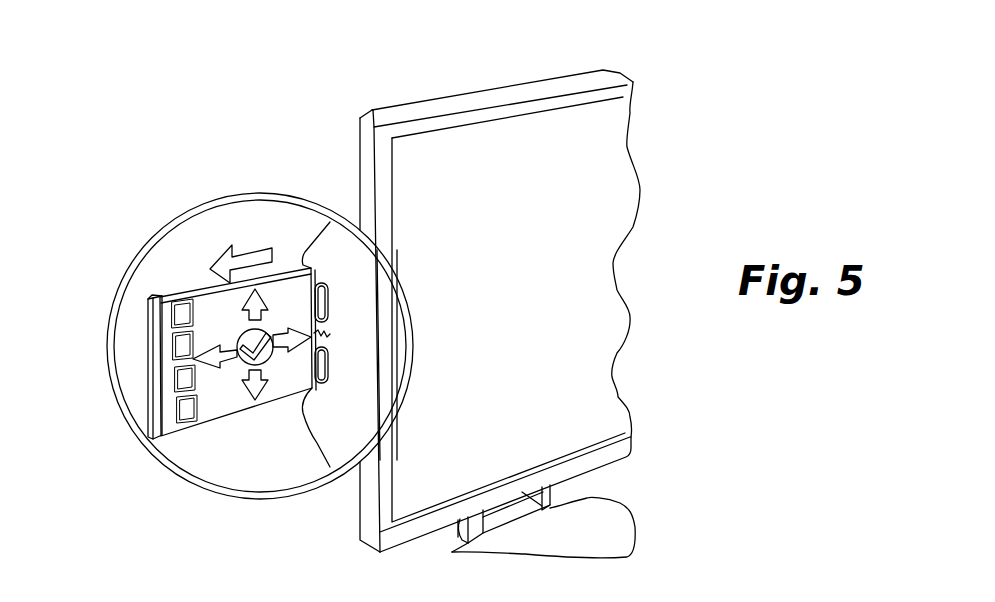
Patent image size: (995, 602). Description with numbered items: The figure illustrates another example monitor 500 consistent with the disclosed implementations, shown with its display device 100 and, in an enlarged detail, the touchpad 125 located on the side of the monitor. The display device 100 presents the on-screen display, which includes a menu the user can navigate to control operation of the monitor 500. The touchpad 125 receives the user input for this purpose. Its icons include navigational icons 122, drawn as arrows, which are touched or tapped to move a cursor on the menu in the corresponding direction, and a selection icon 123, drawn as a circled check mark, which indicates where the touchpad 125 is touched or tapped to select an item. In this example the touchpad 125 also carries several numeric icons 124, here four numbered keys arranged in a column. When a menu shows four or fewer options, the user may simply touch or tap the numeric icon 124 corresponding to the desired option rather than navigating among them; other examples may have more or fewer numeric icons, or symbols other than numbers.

The display device 100 is at (452, 163).
The monitor 500 is at (302, 127).
The touchpad 125 is at (215, 310).
The numeric icons 124 is at (175, 350).
The navigational icons 122 is at (256, 374).
The selection icon 123 is at (250, 354).